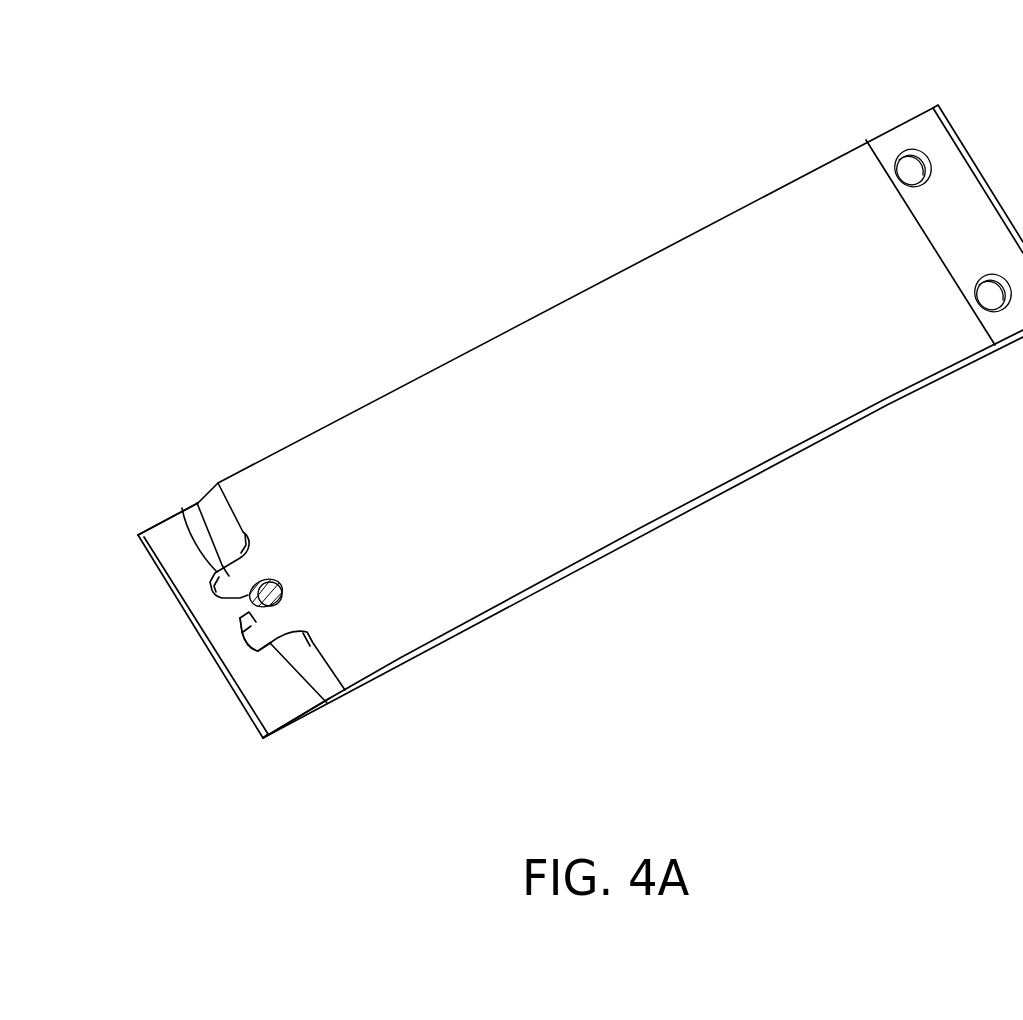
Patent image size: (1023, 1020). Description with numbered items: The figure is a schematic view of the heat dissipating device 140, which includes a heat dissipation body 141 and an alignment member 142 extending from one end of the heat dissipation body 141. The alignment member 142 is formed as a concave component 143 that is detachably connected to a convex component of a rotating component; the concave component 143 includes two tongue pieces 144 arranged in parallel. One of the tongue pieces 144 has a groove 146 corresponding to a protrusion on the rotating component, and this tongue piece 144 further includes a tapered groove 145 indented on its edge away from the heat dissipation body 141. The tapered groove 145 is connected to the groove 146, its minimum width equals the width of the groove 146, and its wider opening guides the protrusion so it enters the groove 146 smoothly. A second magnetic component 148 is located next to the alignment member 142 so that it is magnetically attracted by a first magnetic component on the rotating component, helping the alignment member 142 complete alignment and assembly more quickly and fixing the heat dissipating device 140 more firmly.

The heat dissipating device 140 is at (818, 86).
The heat dissipation body 141 is at (547, 343).
The alignment member 142 is at (234, 620).
The concave component 143 is at (195, 382).
The tongue pieces 144 is at (162, 535).
The tapered groove 145 is at (236, 612).
The groove 146 is at (271, 648).
The second magnetic component 148 is at (252, 604).